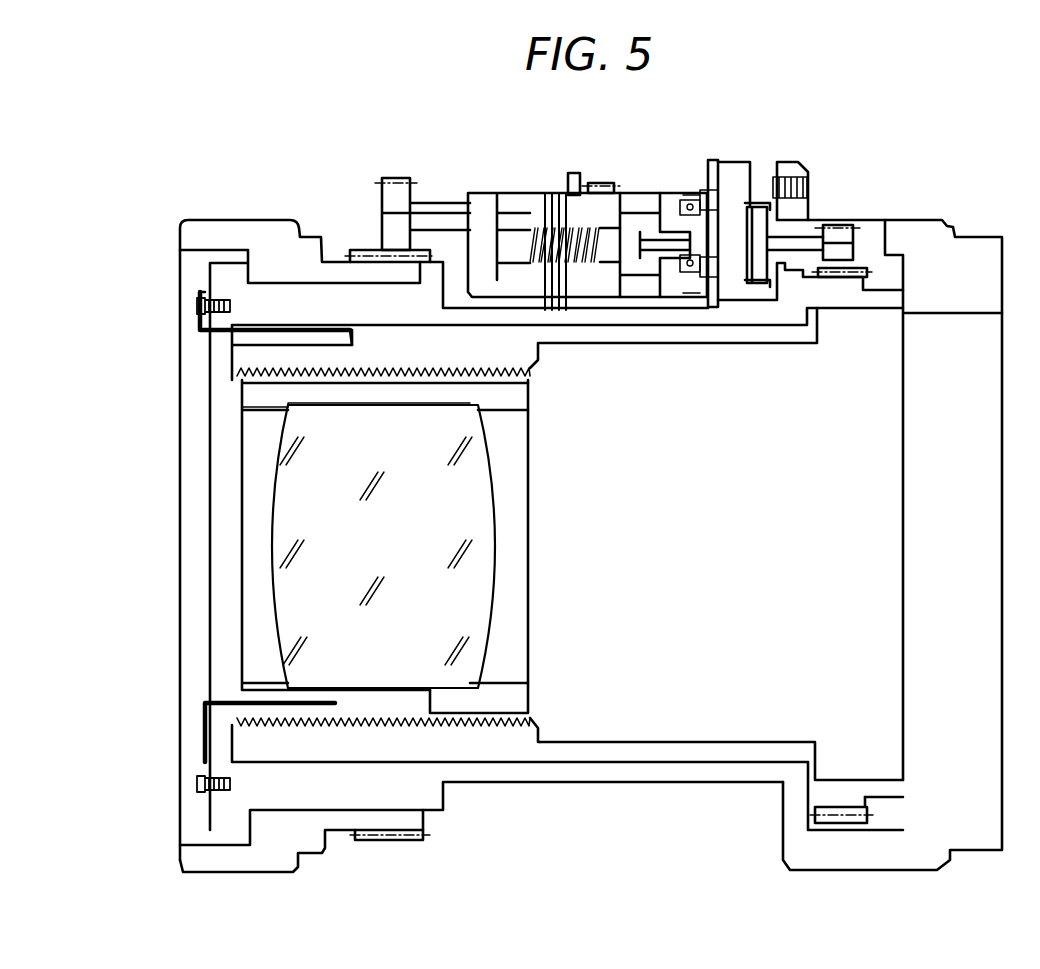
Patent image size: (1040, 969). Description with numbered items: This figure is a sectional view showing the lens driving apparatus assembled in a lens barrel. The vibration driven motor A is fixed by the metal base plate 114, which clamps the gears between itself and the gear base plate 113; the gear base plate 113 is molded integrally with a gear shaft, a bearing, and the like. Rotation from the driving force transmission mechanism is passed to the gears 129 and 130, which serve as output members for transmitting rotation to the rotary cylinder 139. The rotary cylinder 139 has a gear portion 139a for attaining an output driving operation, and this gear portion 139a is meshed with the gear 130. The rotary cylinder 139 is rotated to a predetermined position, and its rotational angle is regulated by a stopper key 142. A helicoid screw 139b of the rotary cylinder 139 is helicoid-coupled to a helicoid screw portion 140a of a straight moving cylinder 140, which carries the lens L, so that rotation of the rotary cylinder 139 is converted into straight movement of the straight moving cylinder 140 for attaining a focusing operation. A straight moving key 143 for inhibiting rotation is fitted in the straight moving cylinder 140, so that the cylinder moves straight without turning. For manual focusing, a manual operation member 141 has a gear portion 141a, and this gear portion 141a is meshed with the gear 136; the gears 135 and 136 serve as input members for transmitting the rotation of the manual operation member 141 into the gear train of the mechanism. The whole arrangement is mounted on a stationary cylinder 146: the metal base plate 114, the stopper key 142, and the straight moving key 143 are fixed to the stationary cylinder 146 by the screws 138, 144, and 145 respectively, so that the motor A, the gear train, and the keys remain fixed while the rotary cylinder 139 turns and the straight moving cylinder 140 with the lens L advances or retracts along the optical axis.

The gear base plate 113 is at (575, 172).
The metal base plate 114 is at (716, 160).
The gear 129 is at (753, 205).
The gear 130 is at (838, 232).
The gear 135 is at (603, 203).
The gear 136 is at (400, 203).
The screw 138 is at (808, 180).
The rotary cylinder 139 is at (725, 335).
The gear portion 139a is at (857, 268).
The helicoid screw 139b is at (232, 373).
The straight moving cylinder 140 is at (530, 397).
The helicoid screw portion 140a is at (527, 388).
The manual operation member 141 is at (268, 234).
The gear portion 141a is at (362, 250).
The stopper key 142 is at (222, 334).
The straight moving key 143 is at (218, 708).
The screw 144 is at (197, 306).
The screw 145 is at (205, 786).
The stationary cylinder 146 is at (927, 230).
The vibration driven motor A is at (593, 205).
The lens L is at (528, 488).